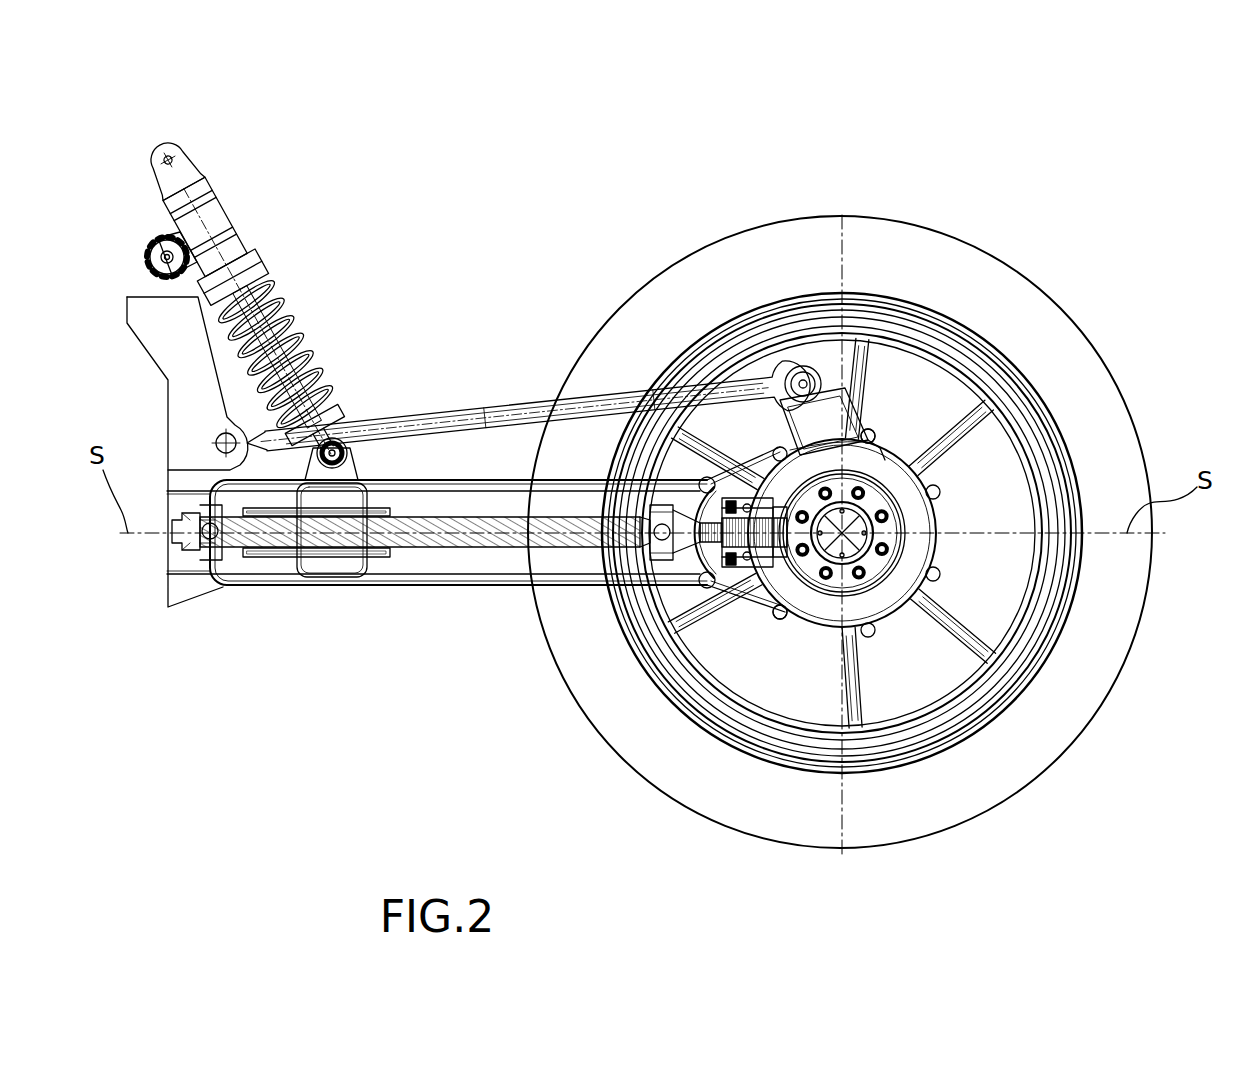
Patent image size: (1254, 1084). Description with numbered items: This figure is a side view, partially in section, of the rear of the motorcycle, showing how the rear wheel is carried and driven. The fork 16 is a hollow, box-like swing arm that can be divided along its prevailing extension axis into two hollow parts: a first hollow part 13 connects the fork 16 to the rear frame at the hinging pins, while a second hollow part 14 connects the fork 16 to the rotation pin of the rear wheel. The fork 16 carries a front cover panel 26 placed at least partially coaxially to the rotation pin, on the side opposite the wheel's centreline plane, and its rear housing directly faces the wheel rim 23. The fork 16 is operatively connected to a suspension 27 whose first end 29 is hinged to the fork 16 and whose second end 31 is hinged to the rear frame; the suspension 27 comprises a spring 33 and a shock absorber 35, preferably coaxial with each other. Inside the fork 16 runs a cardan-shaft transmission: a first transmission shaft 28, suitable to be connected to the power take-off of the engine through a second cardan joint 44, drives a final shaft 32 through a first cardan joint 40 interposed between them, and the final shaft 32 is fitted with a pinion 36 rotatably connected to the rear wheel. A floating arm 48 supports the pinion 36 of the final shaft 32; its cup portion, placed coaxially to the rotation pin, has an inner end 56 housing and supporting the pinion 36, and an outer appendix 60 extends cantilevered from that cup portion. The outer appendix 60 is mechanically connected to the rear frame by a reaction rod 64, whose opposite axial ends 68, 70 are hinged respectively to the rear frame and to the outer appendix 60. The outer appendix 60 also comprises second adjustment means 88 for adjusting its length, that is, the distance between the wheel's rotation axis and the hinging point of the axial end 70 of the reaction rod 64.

The first hollow part 13 is at (460, 590).
The second hollow part 14 is at (697, 585).
The fork 16 is at (356, 600).
The wheel rim 23 is at (997, 430).
The front cover panel 26 is at (918, 550).
The suspension 27 is at (297, 264).
The first transmission shaft 28 is at (445, 545).
The first end 29 is at (360, 450).
The second end 31 is at (172, 166).
The final shaft 32 is at (715, 580).
The spring 33 is at (257, 321).
The shock absorber 35 is at (275, 354).
The pinion 36 is at (795, 603).
The first cardan joint 40 is at (645, 567).
The second cardan joint 44 is at (213, 563).
The floating arm 48 is at (950, 407).
The inner end 56 is at (763, 500).
The outer appendix 60 is at (837, 392).
The reaction rod 64 is at (475, 403).
The axial end 68 is at (217, 433).
The axial end 70 is at (793, 358).
The second adjustment means 88 is at (893, 432).